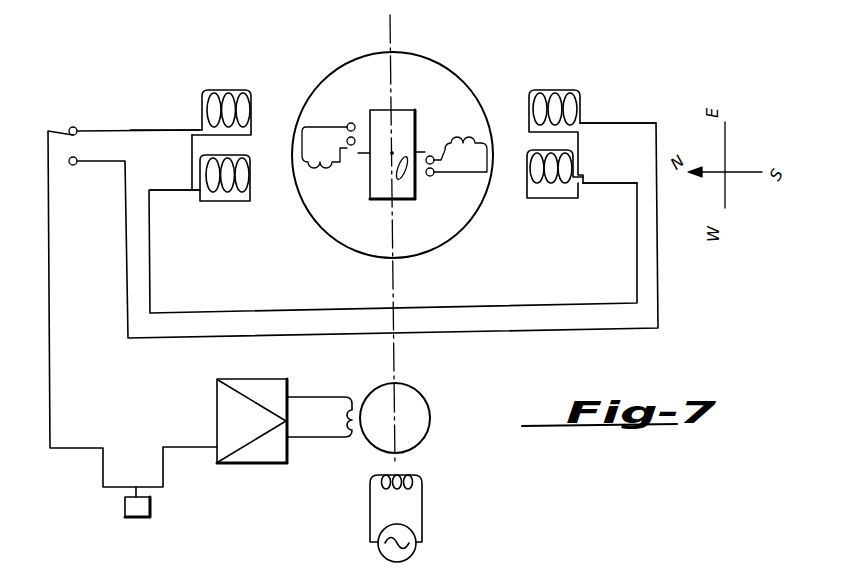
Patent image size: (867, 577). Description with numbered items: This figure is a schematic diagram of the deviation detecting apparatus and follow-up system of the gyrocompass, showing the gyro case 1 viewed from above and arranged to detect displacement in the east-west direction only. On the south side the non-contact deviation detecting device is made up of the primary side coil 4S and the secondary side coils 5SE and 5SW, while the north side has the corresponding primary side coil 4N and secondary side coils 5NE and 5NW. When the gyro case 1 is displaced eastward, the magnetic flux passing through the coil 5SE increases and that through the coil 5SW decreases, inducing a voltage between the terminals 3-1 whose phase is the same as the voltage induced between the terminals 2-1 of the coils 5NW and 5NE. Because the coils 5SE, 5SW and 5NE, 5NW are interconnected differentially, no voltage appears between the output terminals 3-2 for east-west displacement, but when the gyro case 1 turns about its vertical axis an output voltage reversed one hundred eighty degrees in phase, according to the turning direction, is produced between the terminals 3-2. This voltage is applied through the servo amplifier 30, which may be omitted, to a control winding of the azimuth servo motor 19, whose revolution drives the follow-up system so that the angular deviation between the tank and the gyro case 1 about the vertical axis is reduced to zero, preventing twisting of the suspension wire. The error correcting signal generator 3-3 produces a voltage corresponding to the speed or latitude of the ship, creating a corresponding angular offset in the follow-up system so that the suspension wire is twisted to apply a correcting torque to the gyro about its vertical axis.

The gyro case 1 is at (461, 79).
The primary side coil 4N is at (325, 127).
The primary side coil 4S is at (448, 175).
The secondary side coil 5NE is at (224, 91).
The secondary side coil 5NW is at (226, 202).
The secondary side coil 5SE is at (556, 92).
The secondary side coil 5SW is at (547, 199).
The output terminals 3-2 is at (76, 157).
The terminals 2-1 is at (165, 143).
The terminals 3-1 is at (612, 143).
The error correcting signal generator 3-3 is at (151, 508).
The servo amplifier 30 is at (258, 380).
The azimuth servo motor 19 is at (428, 402).